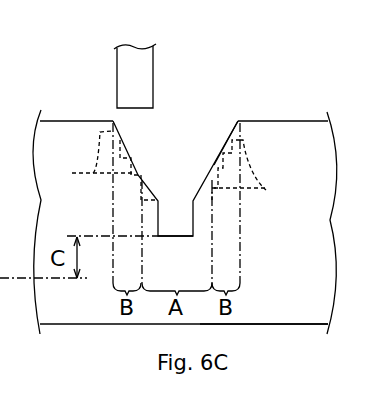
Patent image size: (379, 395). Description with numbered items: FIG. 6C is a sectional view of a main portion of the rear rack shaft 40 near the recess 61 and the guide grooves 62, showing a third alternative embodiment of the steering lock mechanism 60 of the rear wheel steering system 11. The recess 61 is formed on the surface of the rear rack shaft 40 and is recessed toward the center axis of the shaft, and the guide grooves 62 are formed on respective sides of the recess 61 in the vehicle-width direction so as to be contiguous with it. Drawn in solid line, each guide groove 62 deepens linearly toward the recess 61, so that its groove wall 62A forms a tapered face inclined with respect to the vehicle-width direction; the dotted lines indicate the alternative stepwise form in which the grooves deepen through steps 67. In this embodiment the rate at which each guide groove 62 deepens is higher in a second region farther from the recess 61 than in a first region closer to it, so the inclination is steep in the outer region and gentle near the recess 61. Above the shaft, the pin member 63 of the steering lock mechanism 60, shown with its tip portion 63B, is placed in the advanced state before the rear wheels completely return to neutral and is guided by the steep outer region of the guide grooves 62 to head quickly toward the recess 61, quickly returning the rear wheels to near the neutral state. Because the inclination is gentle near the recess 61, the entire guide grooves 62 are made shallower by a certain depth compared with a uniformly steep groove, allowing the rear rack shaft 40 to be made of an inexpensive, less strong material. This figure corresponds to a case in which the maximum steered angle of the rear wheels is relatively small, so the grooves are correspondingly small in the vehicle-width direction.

The steering lock mechanism 60 is at (193, 182).
The rear wheel steering system 11 is at (274, 92).
The guide grooves 62 is at (200, 186).
The groove wall 62A is at (198, 191).
The recess 61 is at (172, 236).
The pin member 63 is at (187, 76).
The blade portion 63B is at (138, 72).
The steps 67 is at (170, 170).
The rear rack shaft 40 is at (292, 305).